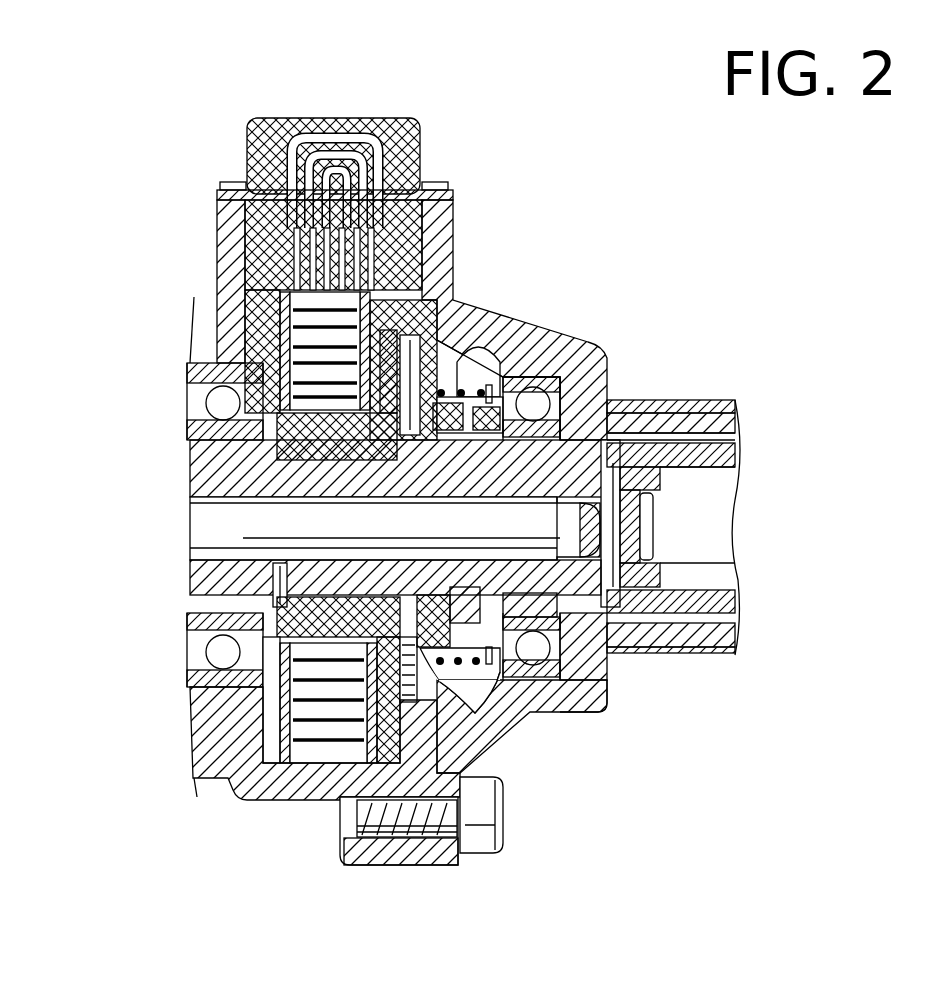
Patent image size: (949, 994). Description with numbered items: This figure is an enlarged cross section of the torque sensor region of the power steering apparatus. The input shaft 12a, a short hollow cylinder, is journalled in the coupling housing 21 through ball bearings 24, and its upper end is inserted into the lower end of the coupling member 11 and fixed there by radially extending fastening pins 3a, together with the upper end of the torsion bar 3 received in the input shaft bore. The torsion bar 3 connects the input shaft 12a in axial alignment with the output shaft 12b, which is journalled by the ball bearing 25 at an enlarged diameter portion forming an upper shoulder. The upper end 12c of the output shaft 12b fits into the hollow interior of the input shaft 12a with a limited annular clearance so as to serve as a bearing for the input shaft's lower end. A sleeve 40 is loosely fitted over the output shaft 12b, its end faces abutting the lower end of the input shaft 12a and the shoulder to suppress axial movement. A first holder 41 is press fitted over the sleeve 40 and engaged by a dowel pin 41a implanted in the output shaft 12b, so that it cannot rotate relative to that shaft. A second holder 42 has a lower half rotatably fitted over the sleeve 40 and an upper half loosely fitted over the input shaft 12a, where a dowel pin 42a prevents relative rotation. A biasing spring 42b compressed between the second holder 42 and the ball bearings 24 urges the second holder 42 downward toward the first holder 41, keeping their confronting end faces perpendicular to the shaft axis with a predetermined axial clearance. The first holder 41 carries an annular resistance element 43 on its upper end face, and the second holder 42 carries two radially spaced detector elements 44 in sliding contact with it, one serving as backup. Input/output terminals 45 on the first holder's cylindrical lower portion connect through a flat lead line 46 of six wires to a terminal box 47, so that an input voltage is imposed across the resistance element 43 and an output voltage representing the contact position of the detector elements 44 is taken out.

The torsion bar 3 is at (210, 520).
The fastening pins 3a is at (653, 567).
The coupling member 11 is at (735, 450).
The input shaft 12a is at (647, 482).
The output shaft 12b is at (193, 475).
The upper end of the output shaft 12c is at (607, 403).
The coupling housing 21 is at (692, 400).
The ball bearings 24 is at (605, 695).
The ball bearing 25 is at (190, 675).
The sleeve 40 is at (215, 690).
The first holder 41 is at (355, 700).
The dowel pin 41a is at (270, 575).
The second holder 42 is at (505, 740).
The dowel pin 42a is at (607, 655).
The biasing spring 42b is at (523, 467).
The resistance element 43 is at (372, 700).
The detector elements 44 is at (530, 720).
The input/output terminals 45 is at (285, 385).
The lead line 46 is at (300, 312).
The terminal box 47 is at (421, 128).